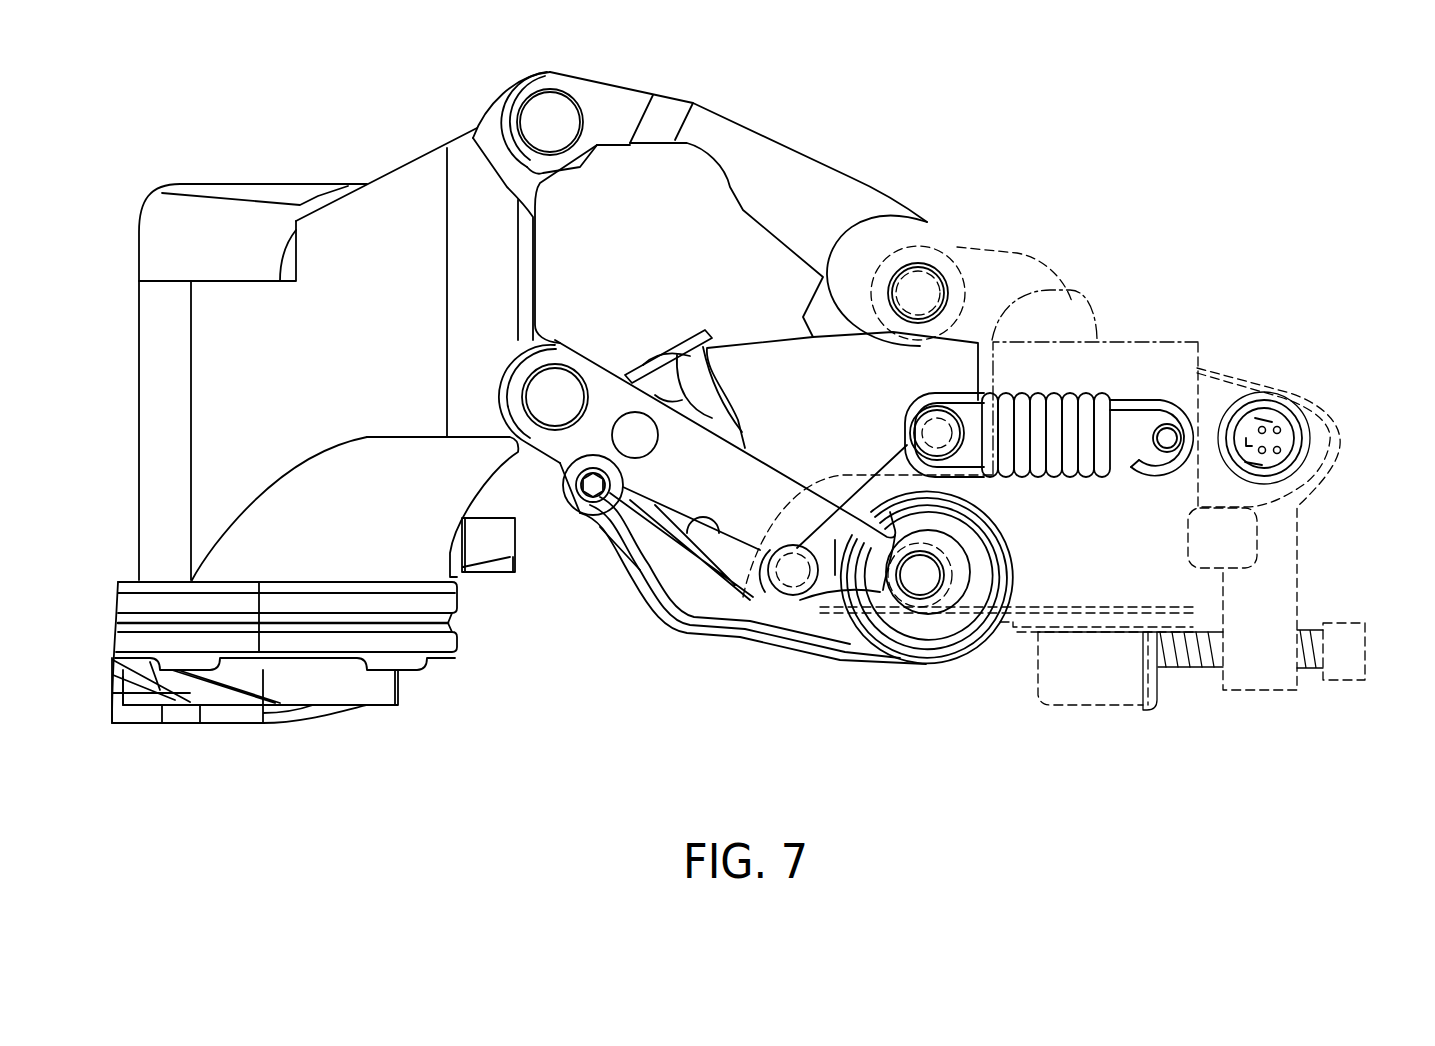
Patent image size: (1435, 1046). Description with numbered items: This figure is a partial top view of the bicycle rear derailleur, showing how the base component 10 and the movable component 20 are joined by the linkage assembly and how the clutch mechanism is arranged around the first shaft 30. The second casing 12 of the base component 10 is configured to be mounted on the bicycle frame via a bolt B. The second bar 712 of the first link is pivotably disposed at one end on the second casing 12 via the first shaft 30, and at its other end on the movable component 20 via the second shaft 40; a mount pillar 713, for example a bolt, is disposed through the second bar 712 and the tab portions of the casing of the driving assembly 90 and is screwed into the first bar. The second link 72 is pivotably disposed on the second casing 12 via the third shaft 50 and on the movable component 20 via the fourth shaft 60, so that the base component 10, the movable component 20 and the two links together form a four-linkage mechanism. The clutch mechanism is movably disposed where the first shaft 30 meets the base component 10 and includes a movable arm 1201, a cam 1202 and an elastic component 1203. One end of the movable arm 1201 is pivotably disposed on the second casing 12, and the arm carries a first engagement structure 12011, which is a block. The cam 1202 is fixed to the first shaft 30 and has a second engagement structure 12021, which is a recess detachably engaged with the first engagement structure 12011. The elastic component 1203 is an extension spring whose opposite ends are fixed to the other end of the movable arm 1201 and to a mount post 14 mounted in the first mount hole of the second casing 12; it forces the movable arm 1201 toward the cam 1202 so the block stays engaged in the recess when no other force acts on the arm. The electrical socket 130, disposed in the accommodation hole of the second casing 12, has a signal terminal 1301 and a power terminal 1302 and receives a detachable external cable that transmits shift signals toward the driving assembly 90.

The base component 10 is at (1209, 322).
The second casing 12 is at (1130, 365).
The mount post 14 is at (1168, 424).
The movable component 20 is at (353, 218).
The first shaft 30 is at (920, 582).
The second shaft 40 is at (553, 400).
The third shaft 50 is at (920, 294).
The fourth shaft 60 is at (547, 120).
The second link 72 is at (718, 132).
The driving assembly 90 is at (726, 330).
The electrical socket 130 is at (1258, 408).
The second bar 712 is at (703, 475).
The mount pillar 713 is at (592, 500).
The movable arm 1201 is at (820, 630).
The cam 1202 is at (993, 617).
The elastic component 1203 is at (1066, 404).
The signal terminal 1301 is at (1281, 427).
The power terminal 1302 is at (1281, 451).
The first engagement structure 12011 is at (836, 580).
The second engagement structure 12021 is at (873, 534).
The bolt B is at (1108, 687).